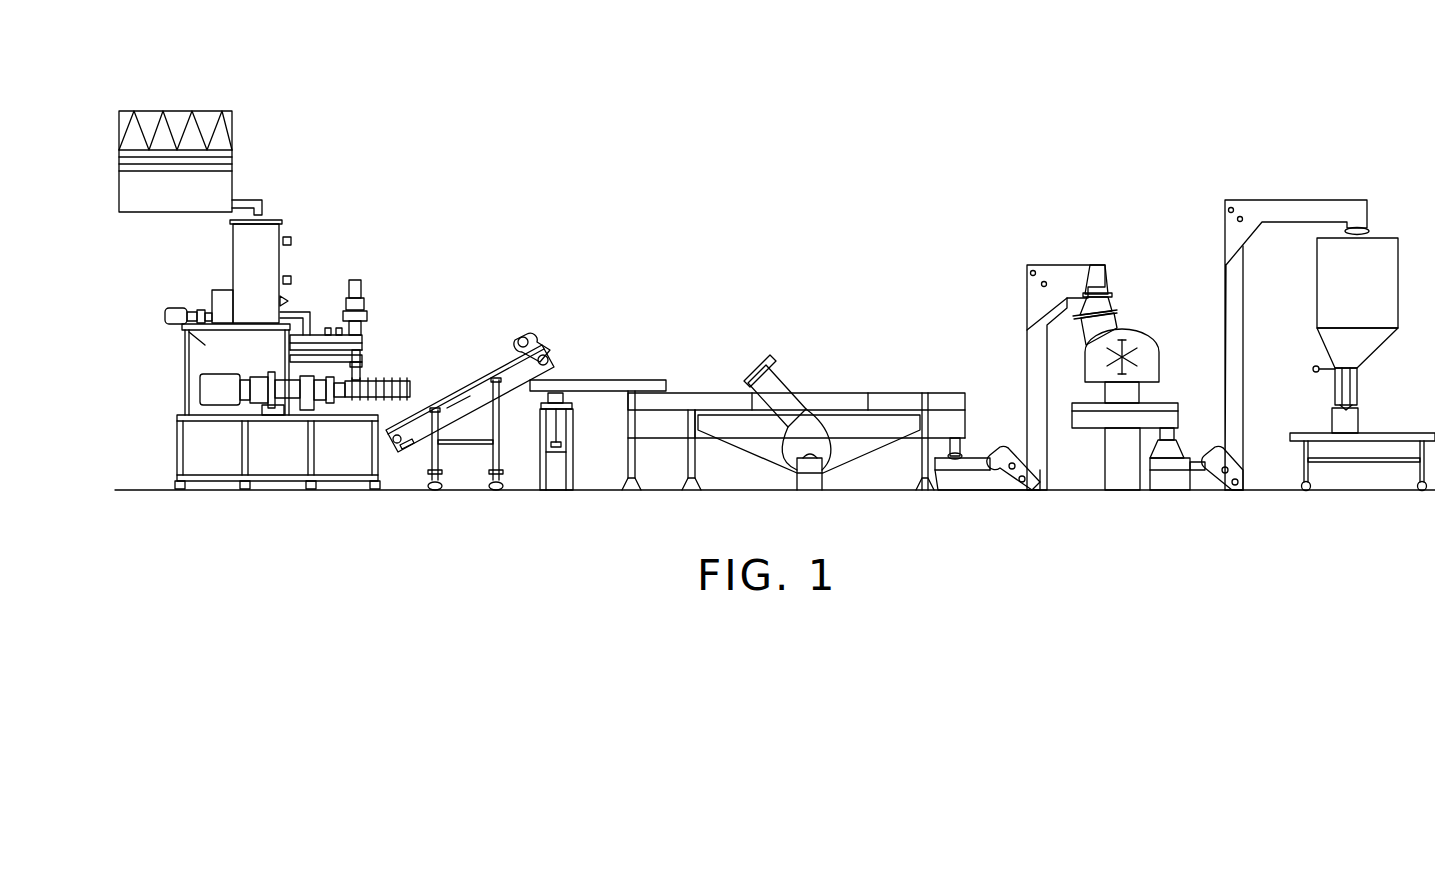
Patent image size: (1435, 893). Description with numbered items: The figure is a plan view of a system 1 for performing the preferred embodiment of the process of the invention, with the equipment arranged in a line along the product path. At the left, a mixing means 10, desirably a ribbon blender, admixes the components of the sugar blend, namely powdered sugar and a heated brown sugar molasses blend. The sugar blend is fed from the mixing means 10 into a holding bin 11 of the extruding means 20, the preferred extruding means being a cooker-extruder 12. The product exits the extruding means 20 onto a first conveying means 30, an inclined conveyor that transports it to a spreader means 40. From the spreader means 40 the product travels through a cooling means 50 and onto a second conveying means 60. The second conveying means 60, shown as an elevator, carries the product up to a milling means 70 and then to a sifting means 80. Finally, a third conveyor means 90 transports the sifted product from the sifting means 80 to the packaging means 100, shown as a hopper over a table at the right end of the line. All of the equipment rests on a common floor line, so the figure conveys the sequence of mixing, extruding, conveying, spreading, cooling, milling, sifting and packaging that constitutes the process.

The system 1 is at (567, 499).
The mixing means 10 is at (205, 110).
The holding bin 11 is at (233, 262).
The cooker-extruder 12 is at (380, 381).
The extruding means 20 is at (352, 280).
The first conveying means 30 is at (522, 336).
The spreader means 40 is at (590, 380).
The cooling means 50 is at (776, 376).
The second conveying means 60 is at (1062, 263).
The milling means 70 is at (1100, 292).
The sifting means 80 is at (1166, 402).
The third conveyor means 90 is at (1287, 200).
The packaging means 100 is at (1380, 238).